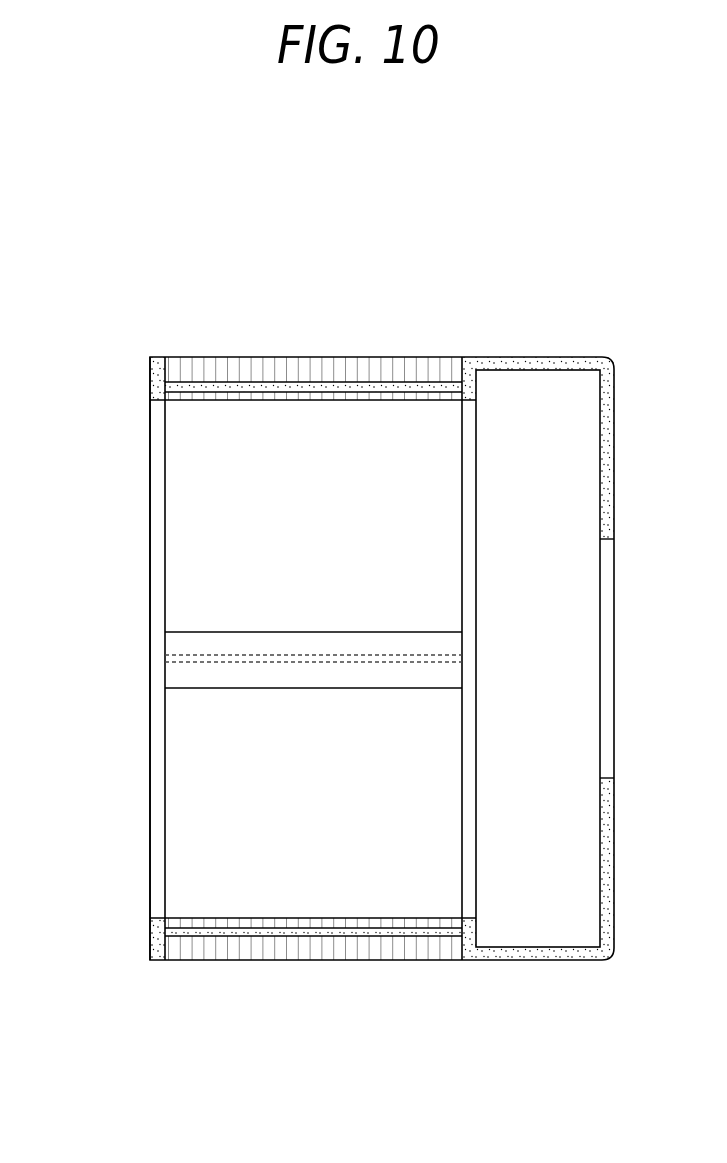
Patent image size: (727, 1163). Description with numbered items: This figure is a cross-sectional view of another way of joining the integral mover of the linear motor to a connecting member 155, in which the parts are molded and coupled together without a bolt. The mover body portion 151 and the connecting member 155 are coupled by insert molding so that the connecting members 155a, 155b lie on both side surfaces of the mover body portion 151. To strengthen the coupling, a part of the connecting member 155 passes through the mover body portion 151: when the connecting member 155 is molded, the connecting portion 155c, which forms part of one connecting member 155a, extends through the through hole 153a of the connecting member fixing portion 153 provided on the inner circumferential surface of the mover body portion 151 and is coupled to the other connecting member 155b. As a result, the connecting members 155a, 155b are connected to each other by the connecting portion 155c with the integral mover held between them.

The connecting member 155 is at (405, 201).
The connecting member 155a is at (481, 359).
The connecting member 155b is at (157, 357).
The connecting portion 155c is at (288, 390).
The mover body portion 151 is at (307, 366).
The connecting member fixing portion 153 is at (207, 398).
The through hole 153a is at (183, 386).